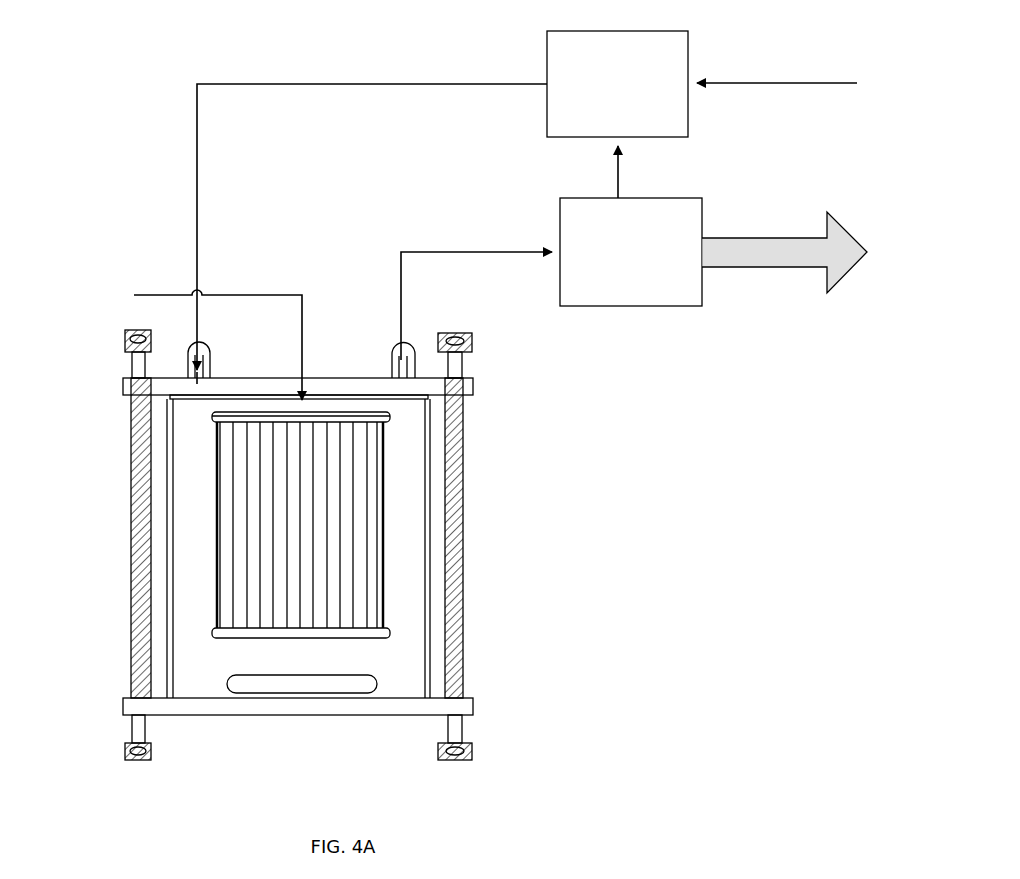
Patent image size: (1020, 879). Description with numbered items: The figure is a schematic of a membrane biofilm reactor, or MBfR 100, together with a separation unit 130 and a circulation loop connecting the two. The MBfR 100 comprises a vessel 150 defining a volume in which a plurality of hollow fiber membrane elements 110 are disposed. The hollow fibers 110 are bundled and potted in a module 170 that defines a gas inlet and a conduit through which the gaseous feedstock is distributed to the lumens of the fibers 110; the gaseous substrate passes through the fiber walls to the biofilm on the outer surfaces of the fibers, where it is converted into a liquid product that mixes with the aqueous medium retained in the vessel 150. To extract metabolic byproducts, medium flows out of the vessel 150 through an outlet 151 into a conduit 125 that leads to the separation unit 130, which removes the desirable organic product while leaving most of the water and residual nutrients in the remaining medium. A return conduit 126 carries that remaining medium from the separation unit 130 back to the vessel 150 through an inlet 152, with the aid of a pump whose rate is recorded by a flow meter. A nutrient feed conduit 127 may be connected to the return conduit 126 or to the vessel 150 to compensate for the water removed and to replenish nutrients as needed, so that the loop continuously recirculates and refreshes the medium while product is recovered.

The membrane biofilm reactor 100 is at (125, 332).
The hollow fiber membrane elements 110 is at (265, 560).
The conduit 125 is at (476, 300).
The conduit 126 is at (372, 228).
The nutrient feed conduit 127 is at (777, 83).
The separation unit 130 is at (713, 252).
The vessel 150 is at (617, 114).
The outlet 151 is at (388, 350).
The inlet 152 is at (213, 360).
The module 170 is at (207, 418).